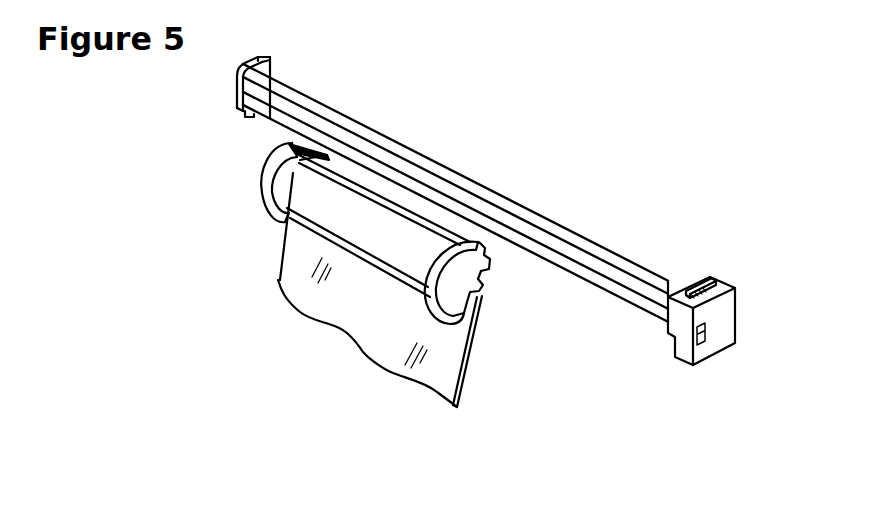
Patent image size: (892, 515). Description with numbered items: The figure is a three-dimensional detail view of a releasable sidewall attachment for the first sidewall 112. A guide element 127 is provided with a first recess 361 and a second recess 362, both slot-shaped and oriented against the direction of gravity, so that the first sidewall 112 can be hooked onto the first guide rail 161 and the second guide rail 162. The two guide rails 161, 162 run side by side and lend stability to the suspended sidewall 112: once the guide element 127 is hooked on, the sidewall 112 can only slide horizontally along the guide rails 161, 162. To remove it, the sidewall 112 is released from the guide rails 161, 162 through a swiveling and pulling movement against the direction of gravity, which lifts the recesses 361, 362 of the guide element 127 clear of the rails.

The first sidewall 112 is at (398, 325).
The guide element 127 is at (367, 232).
The first guide rail 161 is at (615, 258).
The second guide rail 162 is at (636, 300).
The first recess 361 is at (485, 258).
The second recess 362 is at (475, 287).